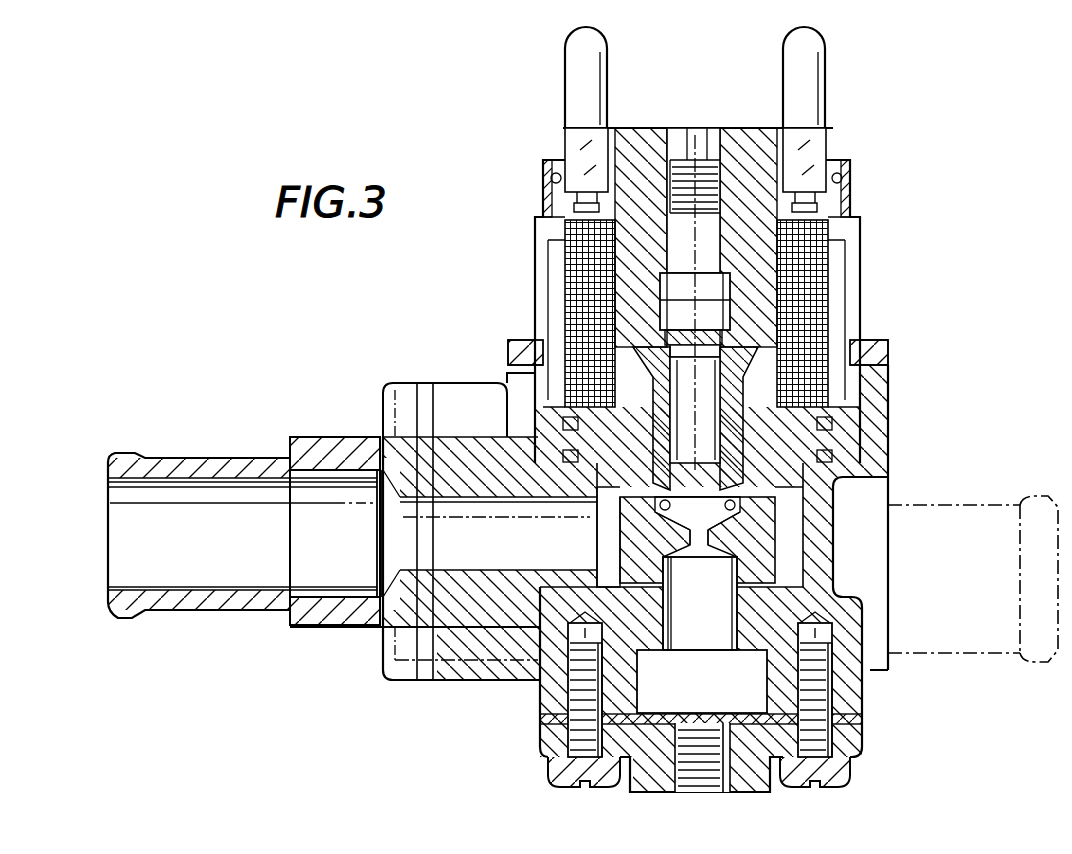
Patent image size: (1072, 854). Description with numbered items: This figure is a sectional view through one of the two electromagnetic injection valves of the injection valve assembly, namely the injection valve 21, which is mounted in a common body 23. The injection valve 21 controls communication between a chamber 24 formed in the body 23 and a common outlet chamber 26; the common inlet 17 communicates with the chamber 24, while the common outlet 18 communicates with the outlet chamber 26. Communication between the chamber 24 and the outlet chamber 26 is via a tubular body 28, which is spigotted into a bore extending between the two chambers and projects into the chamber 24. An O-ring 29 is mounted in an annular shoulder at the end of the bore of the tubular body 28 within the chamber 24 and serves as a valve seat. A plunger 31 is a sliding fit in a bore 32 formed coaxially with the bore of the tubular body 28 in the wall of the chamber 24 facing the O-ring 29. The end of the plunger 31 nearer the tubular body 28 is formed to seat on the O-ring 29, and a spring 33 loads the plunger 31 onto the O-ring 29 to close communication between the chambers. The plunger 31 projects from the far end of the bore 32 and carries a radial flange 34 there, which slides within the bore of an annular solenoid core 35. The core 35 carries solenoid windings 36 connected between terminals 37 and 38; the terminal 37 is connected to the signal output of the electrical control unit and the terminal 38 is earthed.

The common inlet 17 is at (212, 468).
The common outlet 18 is at (976, 653).
The electromagnetic injection valve 21 is at (850, 320).
The common body 23 is at (466, 452).
The chamber 24 is at (820, 553).
The common outlet chamber 26 is at (800, 687).
The tubular body 28 is at (648, 623).
The O-ring 29 is at (740, 512).
The plunger 31 is at (609, 483).
The bore 32 is at (748, 502).
The spring 33 is at (720, 387).
The radial flange 34 is at (643, 357).
The annular solenoid core 35 is at (623, 300).
The solenoid windings 36 is at (800, 284).
The terminal 37 is at (808, 83).
The terminal 38 is at (578, 80).